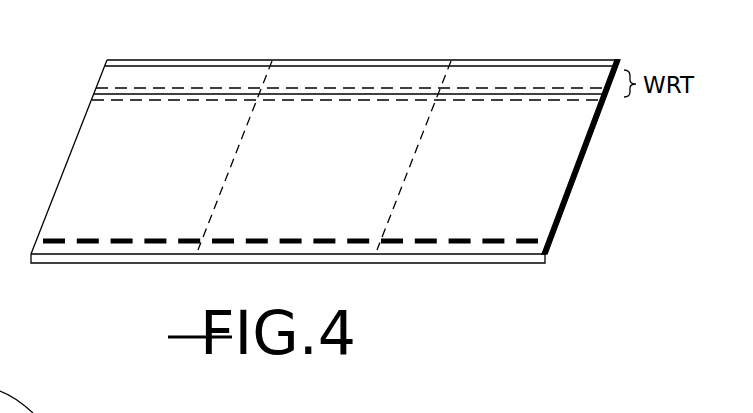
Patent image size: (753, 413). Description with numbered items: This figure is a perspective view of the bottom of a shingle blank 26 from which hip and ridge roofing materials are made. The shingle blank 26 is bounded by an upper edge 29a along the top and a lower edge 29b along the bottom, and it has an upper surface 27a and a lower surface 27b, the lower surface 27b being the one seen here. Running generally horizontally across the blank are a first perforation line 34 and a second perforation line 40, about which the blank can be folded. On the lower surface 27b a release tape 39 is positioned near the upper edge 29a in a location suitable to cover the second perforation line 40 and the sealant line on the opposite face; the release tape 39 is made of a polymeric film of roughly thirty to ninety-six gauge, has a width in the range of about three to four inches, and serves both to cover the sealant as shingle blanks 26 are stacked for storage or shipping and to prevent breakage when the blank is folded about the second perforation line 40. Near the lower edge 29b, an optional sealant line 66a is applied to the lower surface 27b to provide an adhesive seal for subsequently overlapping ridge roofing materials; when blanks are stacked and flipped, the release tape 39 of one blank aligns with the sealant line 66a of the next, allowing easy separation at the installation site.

The upper edge 29a is at (248, 60).
The release tape 39 is at (565, 72).
The second perforation line 40 is at (393, 90).
The first perforation line 34 is at (571, 106).
The sealant line 66a is at (524, 236).
The shingle blank 26 is at (517, 264).
The lower edge 29b is at (410, 264).
The upper surface 27a is at (82, 264).
The lower surface 27b is at (148, 204).